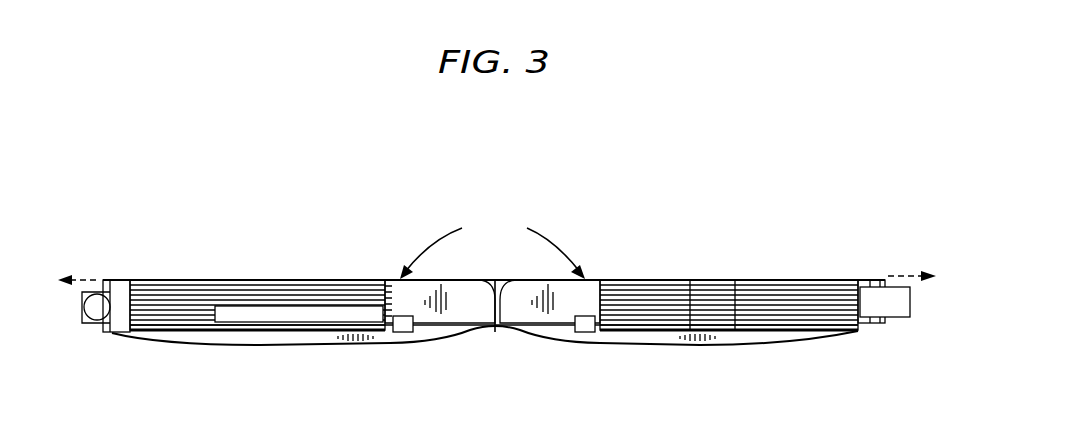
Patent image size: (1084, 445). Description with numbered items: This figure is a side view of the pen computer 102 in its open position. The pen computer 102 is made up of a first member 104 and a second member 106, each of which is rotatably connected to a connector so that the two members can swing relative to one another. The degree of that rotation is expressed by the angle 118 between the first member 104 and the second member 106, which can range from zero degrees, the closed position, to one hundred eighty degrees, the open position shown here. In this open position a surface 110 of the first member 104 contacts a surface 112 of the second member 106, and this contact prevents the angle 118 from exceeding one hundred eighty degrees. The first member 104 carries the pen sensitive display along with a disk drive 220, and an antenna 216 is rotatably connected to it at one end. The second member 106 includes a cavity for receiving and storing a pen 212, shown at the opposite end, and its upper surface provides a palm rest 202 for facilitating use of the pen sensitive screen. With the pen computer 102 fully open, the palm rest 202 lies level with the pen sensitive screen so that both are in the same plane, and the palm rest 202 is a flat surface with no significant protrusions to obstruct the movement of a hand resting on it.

The pen computer 102 is at (470, 150).
The first member 104 is at (210, 279).
The second member 106 is at (660, 342).
The surface of the first member 110 is at (466, 324).
The surface of the second member 112 is at (514, 324).
The angle 118 is at (500, 215).
The palm rest 202 is at (676, 277).
The pen 212 is at (898, 319).
The antenna 216 is at (120, 333).
The disk drive 220 is at (312, 323).